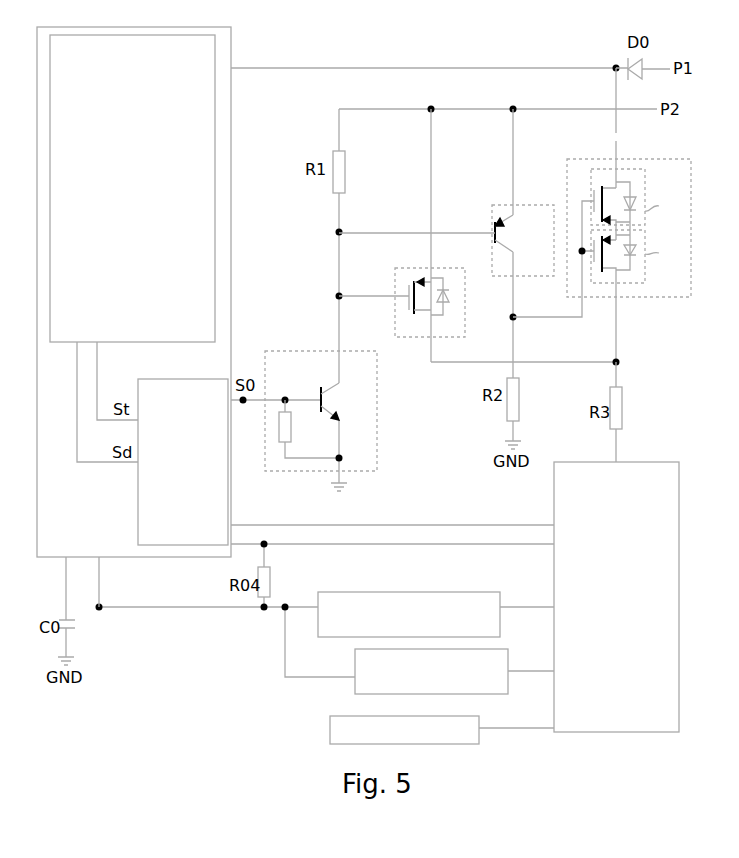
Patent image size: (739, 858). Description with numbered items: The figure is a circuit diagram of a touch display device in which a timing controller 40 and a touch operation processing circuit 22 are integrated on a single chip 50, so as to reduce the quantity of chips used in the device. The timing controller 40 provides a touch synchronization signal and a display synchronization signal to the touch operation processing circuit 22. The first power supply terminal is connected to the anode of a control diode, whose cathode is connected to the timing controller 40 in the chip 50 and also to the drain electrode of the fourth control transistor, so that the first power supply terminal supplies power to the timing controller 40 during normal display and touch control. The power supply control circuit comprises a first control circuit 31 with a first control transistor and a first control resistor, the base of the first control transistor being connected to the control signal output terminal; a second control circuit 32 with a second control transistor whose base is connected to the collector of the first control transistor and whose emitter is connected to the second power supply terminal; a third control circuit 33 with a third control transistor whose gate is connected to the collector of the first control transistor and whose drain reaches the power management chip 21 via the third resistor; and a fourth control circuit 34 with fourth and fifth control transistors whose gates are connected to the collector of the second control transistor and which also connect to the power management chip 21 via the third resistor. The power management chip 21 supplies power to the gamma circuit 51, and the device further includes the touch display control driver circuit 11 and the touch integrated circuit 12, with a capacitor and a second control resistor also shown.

The chip 50 is at (231, 57).
The timing controller 40 is at (170, 341).
The touch operation processing circuit 22 is at (138, 528).
The power management chip 21 is at (662, 462).
The touch display control driver circuit 11 is at (425, 591).
The touch integrated circuit 12 is at (355, 668).
The gamma circuit 51 is at (330, 718).
The first control circuit 31 is at (325, 351).
The second control circuit 32 is at (496, 205).
The third control circuit 33 is at (414, 264).
The fourth control circuit 34 is at (593, 159).